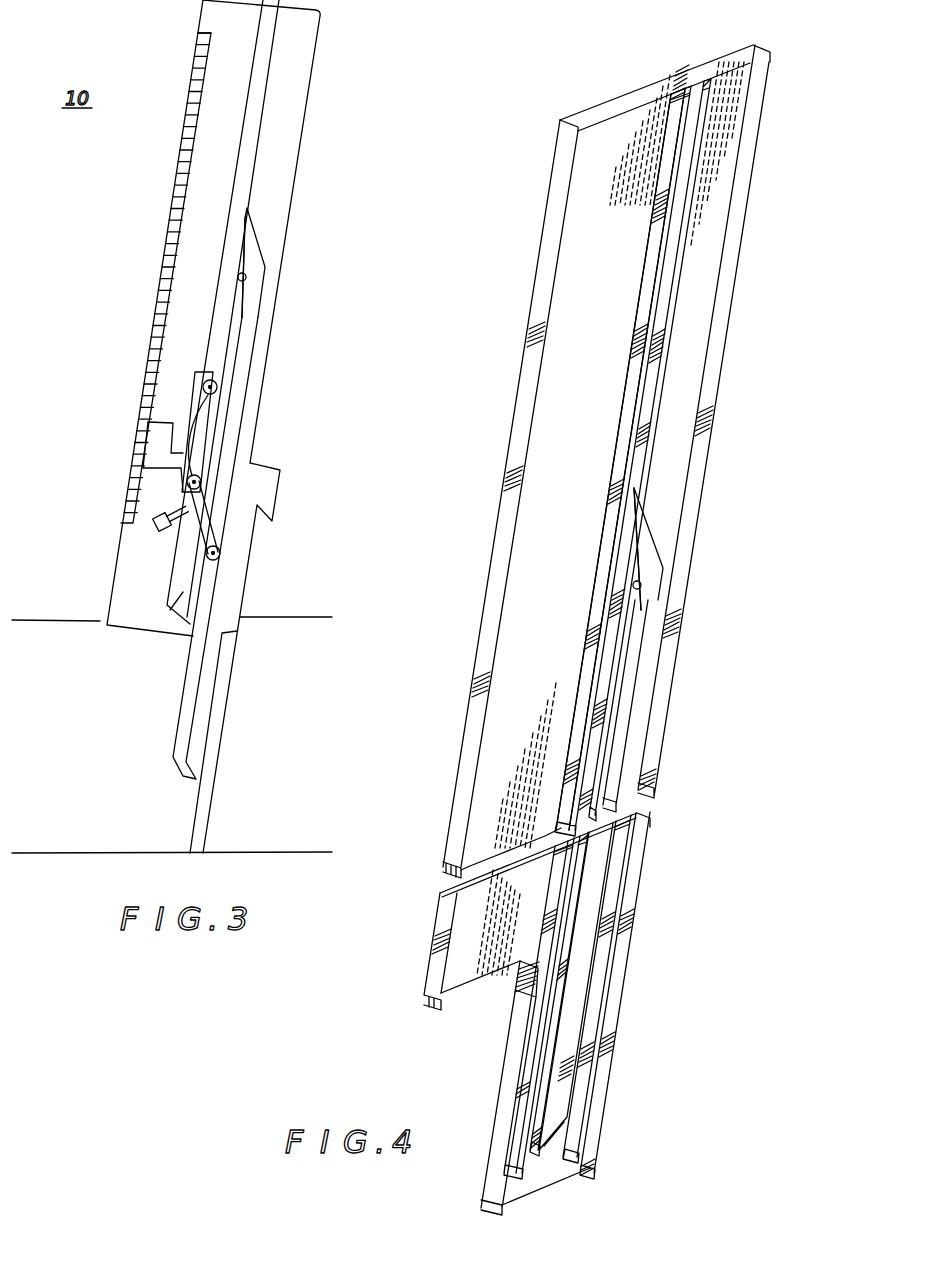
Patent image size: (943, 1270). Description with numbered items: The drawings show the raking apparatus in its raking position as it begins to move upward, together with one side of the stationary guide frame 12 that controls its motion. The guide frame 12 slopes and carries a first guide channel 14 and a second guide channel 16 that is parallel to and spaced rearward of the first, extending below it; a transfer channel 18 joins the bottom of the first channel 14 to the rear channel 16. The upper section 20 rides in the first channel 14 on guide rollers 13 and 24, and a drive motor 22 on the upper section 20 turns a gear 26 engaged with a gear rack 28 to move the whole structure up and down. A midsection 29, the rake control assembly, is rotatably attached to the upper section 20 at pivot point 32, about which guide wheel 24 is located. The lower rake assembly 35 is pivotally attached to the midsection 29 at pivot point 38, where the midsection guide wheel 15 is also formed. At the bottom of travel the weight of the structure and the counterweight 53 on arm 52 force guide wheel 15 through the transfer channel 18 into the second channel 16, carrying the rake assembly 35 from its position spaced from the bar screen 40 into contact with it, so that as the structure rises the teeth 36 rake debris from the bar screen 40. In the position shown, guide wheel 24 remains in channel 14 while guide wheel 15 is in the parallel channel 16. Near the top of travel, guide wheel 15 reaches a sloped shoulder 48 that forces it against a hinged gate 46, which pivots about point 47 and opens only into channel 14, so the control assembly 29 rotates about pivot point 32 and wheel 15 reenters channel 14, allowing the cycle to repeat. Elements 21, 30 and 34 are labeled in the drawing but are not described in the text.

In FIG. 3, the stationary guide frame 12 is at (213, 426).
In FIG. 4, the stationary guide frame 12 is at (712, 455).
In FIG. 3, the guide roller 13 is at (205, 385).
In FIG. 3, the first guide channel 14 is at (262, 62).
In FIG. 4, the first guide channel 14 is at (668, 283).
In FIG. 3, the midsection guide wheel 15 is at (220, 578).
In FIG. 3, the second guide channel 16 is at (245, 358).
In FIG. 4, the second guide channel 16 is at (648, 675).
In FIG. 3, the transfer channel 18 is at (190, 615).
In FIG. 4, the transfer channel 18 is at (553, 1153).
In FIG. 3, the upper section 20 is at (192, 400).
In FIG. 3, the slot 21 is at (215, 363).
In FIG. 3, the drive motor 22 is at (157, 450).
In FIG. 3, the guide wheel 24 is at (205, 440).
In FIG. 3, the gear 26 is at (143, 432).
In FIG. 3, the gear rack 28 is at (172, 215).
In FIG. 3, the midsection 29 is at (180, 498).
In FIG. 3, the link 30 is at (210, 525).
In FIG. 3, the pivot point 32 is at (200, 480).
In FIG. 3, the plate extension 34 is at (187, 725).
In FIG. 3, the rake assembly 35 is at (182, 690).
In FIG. 3, the rake teeth 36 is at (195, 782).
In FIG. 3, the pivot point 38 is at (220, 553).
In FIG. 3, the bar screen 40 is at (210, 795).
In FIG. 3, the hinged gate 46 is at (245, 262).
In FIG. 4, the hinged gate 46 is at (637, 550).
In FIG. 3, the gate pivot point 47 is at (247, 282).
In FIG. 4, the gate pivot point 47 is at (637, 585).
In FIG. 3, the sloped shoulder 48 is at (257, 240).
In FIG. 4, the sloped shoulder 48 is at (653, 560).
In FIG. 3, the arm 52 is at (182, 537).
In FIG. 3, the counterweight 53 is at (157, 522).